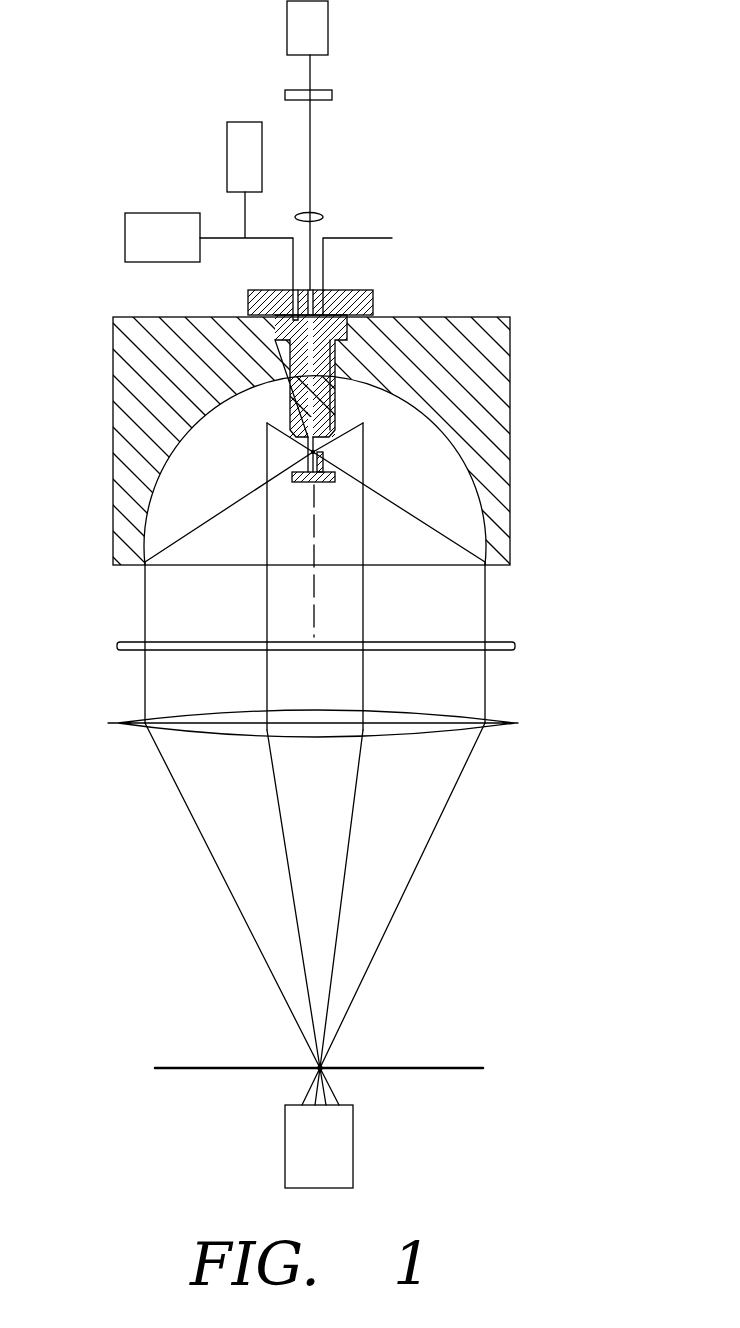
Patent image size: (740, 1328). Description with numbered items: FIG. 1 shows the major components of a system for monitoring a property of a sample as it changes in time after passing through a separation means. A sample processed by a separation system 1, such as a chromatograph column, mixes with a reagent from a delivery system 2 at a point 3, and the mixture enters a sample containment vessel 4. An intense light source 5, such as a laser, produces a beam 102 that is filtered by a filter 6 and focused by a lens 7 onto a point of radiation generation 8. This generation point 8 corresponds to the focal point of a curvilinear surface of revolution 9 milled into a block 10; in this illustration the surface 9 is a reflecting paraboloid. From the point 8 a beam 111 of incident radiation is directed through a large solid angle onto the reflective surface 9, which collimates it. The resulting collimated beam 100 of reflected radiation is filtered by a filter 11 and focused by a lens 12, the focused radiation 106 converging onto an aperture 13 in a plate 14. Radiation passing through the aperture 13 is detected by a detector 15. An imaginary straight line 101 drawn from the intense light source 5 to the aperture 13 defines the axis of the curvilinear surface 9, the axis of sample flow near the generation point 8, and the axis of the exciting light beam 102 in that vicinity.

The separation system 1 is at (125, 238).
The delivery system 2 is at (227, 163).
The point 3 is at (242, 243).
The sample containment vessel 4 is at (375, 296).
The intense light source 5 is at (287, 33).
The filter 6 is at (285, 97).
The lens 7 is at (323, 217).
The point of radiation generation 8 is at (313, 452).
The curvilinear surface of revolution 9 is at (468, 507).
The block 10 is at (521, 344).
The filter 11 is at (515, 646).
The lens 12 is at (518, 723).
The aperture 13 is at (327, 1065).
The plate 14 is at (205, 1068).
The detector 15 is at (353, 1162).
The collimated beam 100 is at (462, 594).
The imaginary straight line 101 is at (314, 613).
The beam 102 is at (310, 132).
The focused radiation 106 is at (402, 858).
The beam of incident radiation 111 is at (393, 457).